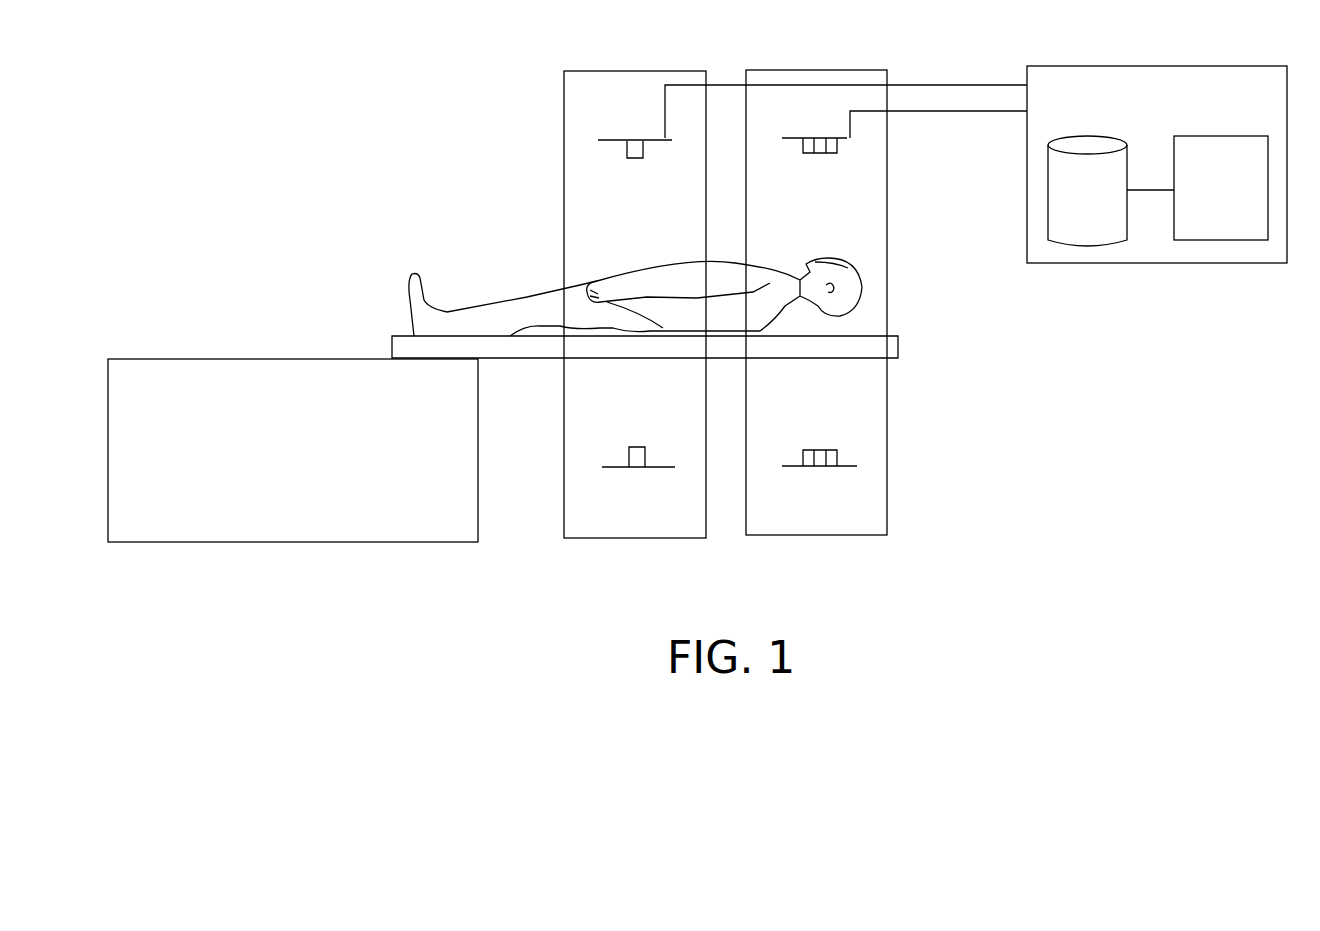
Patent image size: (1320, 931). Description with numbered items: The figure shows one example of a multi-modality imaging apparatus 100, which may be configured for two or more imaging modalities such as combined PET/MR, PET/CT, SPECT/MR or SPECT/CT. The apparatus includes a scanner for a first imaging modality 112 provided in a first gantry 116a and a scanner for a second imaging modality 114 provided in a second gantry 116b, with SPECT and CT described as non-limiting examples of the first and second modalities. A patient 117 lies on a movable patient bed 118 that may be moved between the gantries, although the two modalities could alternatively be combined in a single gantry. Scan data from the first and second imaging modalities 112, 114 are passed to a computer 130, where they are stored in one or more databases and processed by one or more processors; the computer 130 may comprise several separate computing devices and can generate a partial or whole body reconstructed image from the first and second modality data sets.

The multi-modality imaging apparatus 100 is at (312, 142).
The first imaging modality 112 is at (600, 141).
The second imaging modality 114 is at (850, 146).
The first gantry 116a is at (634, 70).
The second gantry 116b is at (813, 70).
The patient 117 is at (537, 292).
The movable patient bed 118 is at (402, 336).
The computer 130 is at (1058, 63).